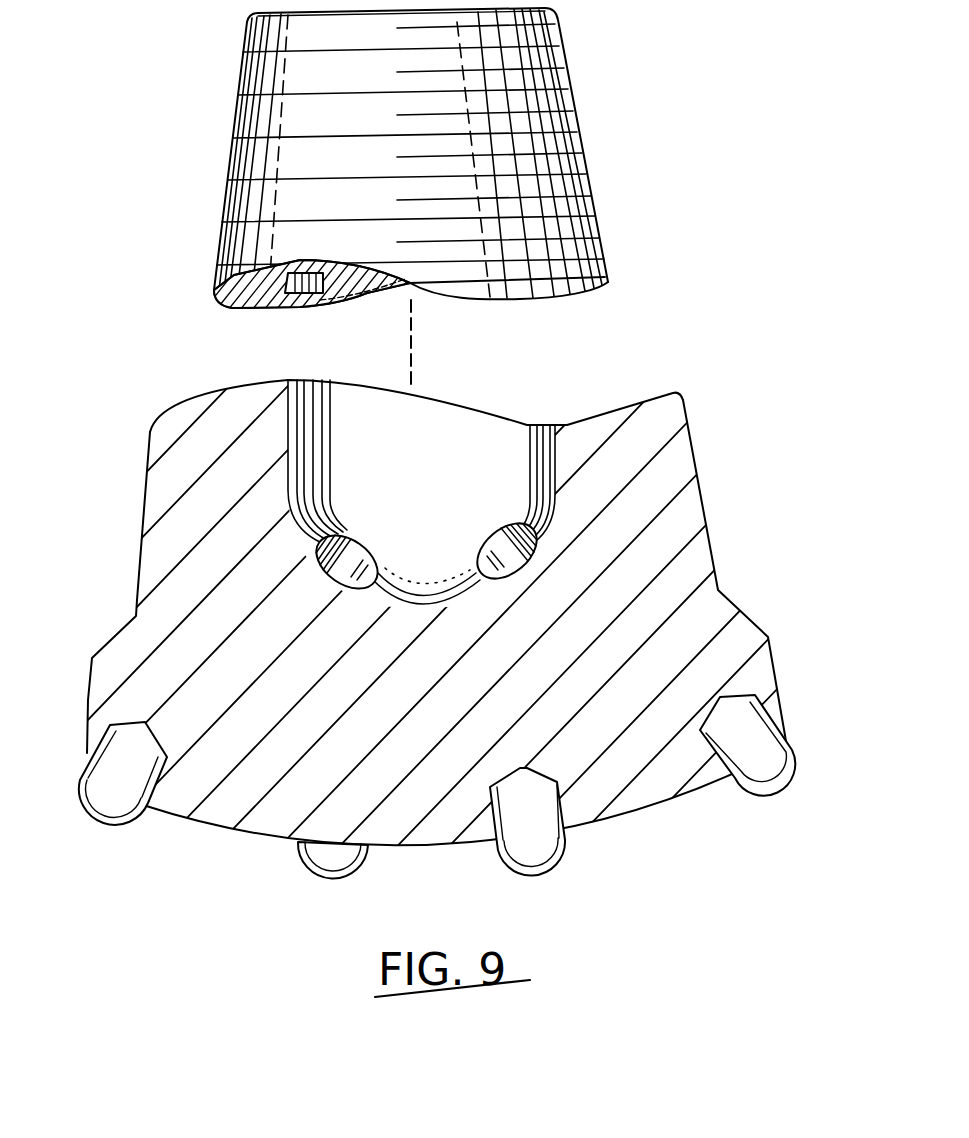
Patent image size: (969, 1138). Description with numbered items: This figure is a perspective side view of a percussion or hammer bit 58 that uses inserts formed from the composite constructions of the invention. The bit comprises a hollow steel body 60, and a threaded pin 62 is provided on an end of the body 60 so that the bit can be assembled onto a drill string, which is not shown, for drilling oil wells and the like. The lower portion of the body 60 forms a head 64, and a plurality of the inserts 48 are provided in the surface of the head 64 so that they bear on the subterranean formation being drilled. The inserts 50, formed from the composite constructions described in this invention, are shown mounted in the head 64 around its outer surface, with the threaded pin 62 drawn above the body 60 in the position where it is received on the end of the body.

The insert 48 is at (790, 787).
The insert 50 is at (557, 867).
The percussion or hammer bit 58 is at (466, 569).
The hollow steel body 60 is at (180, 487).
The threaded pin 62 is at (577, 143).
The head 64 is at (774, 663).